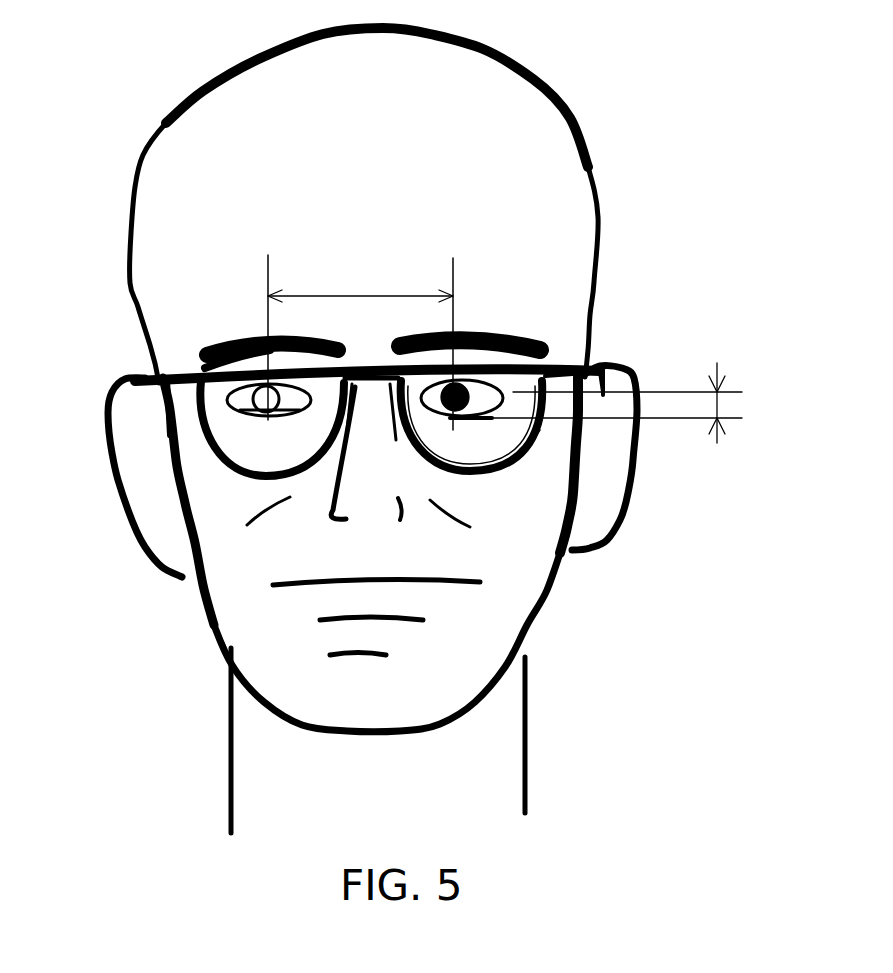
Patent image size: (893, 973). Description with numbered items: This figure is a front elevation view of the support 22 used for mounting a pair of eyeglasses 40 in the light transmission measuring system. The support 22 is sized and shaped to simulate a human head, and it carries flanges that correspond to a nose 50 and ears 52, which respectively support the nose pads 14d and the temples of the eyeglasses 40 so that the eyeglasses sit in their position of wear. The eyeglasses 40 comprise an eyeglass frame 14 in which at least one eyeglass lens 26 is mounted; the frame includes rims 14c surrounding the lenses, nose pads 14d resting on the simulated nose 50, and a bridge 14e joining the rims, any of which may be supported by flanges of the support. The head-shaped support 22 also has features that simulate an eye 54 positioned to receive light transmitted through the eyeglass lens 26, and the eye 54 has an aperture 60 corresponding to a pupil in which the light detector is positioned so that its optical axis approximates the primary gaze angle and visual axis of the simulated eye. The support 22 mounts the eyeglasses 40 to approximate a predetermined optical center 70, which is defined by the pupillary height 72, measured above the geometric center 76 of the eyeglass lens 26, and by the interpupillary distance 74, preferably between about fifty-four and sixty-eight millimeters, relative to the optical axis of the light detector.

The support 22 is at (531, 75).
The ears 52 is at (143, 502).
The eyeglass frame 14 is at (565, 372).
The rim 14c is at (218, 447).
The eyeglass lens 26 is at (493, 439).
The bridge 14e is at (368, 372).
The nose pad 14d is at (388, 423).
The pair of eyeglasses 40 is at (185, 350).
The eye 54 is at (205, 378).
The aperture 60 is at (462, 395).
The geometric center 76 is at (462, 420).
The interpupillary distance 74 is at (383, 342).
The pupillary height 72 is at (596, 390).
The optical center 70 is at (466, 420).
The nose 50 is at (350, 502).